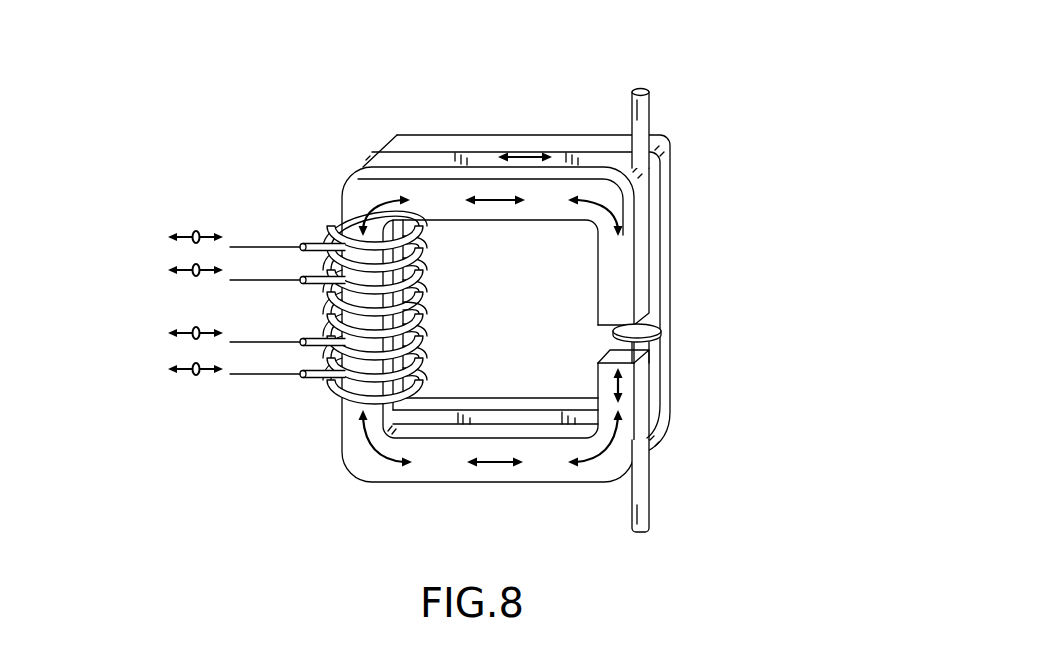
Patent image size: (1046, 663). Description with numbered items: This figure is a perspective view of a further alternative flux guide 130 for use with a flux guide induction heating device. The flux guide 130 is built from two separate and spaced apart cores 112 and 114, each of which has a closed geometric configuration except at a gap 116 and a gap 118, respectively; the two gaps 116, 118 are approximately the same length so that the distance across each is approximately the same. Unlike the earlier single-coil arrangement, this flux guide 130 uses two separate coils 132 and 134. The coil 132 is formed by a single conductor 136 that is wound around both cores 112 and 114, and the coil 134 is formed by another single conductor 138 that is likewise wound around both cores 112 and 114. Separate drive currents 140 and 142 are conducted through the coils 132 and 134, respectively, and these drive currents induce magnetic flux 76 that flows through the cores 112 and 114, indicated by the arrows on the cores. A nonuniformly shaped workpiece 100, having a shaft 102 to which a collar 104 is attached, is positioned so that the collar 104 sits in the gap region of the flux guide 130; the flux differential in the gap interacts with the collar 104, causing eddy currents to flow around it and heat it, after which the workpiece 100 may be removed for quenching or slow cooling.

The workpiece 100 is at (642, 70).
The shaft 102 is at (642, 128).
The collar 104 is at (658, 330).
The core 112 is at (380, 173).
The core 114 is at (416, 140).
The gap 116 is at (594, 323).
The gap 118 is at (683, 280).
The flux guide 130 is at (358, 503).
The coil 132 is at (430, 222).
The coil 134 is at (430, 315).
The conductor 136 is at (280, 280).
The conductor 138 is at (260, 342).
The drive current 140 is at (190, 264).
The drive current 142 is at (190, 363).
The magnetic flux 76 is at (526, 157).